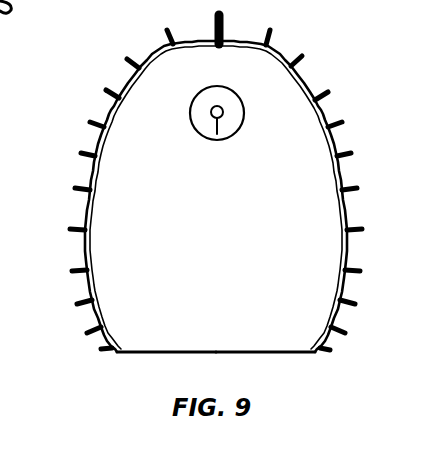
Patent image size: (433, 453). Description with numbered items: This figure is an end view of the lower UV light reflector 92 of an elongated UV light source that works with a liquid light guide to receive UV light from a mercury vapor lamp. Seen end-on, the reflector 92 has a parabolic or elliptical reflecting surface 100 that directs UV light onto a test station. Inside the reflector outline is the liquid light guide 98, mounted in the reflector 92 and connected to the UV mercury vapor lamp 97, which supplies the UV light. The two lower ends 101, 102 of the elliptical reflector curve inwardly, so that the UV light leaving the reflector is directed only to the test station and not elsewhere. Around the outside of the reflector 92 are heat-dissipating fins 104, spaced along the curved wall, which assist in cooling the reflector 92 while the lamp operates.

The UV light reflector 92 is at (88, 162).
The UV mercury vapor lamp 97 is at (217, 134).
The liquid light guide 98 is at (203, 132).
The reflecting surface 100 is at (324, 127).
The lower end 101 is at (117, 354).
The lower end 102 is at (314, 354).
The heat-dissipating fins 104 is at (271, 32).